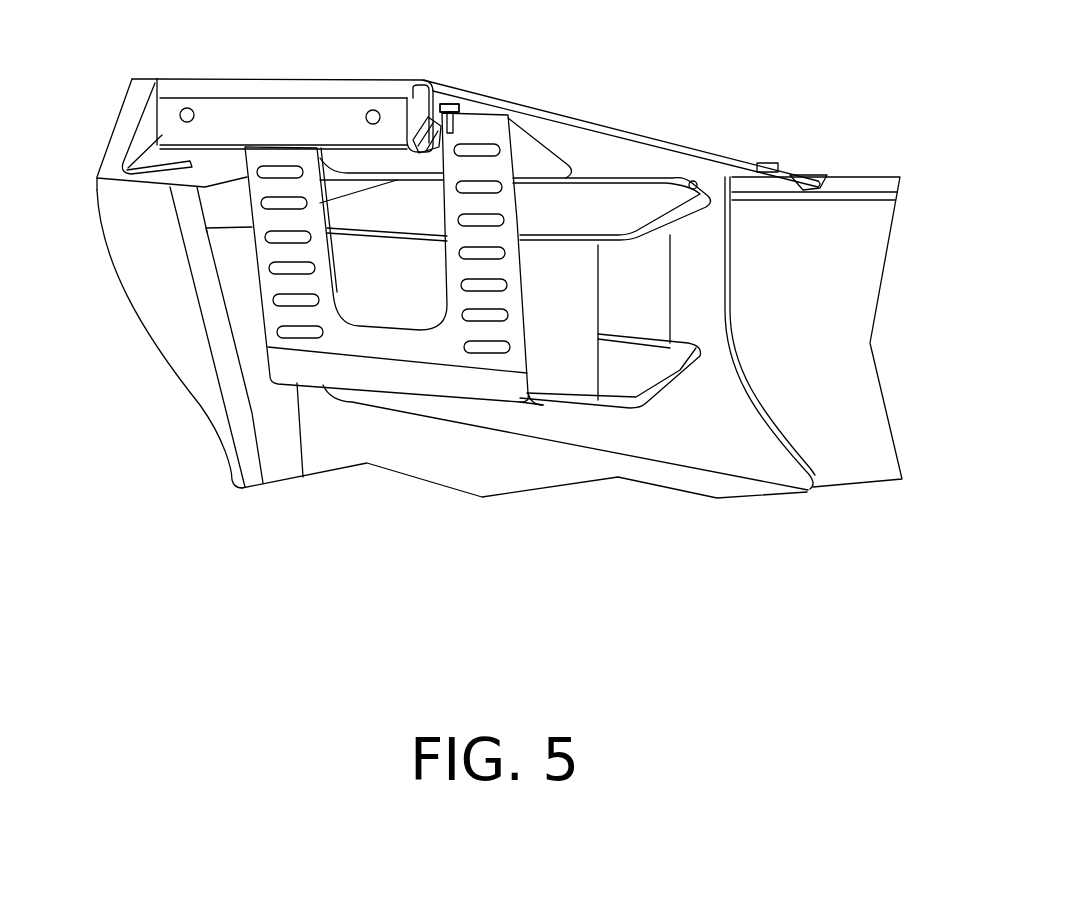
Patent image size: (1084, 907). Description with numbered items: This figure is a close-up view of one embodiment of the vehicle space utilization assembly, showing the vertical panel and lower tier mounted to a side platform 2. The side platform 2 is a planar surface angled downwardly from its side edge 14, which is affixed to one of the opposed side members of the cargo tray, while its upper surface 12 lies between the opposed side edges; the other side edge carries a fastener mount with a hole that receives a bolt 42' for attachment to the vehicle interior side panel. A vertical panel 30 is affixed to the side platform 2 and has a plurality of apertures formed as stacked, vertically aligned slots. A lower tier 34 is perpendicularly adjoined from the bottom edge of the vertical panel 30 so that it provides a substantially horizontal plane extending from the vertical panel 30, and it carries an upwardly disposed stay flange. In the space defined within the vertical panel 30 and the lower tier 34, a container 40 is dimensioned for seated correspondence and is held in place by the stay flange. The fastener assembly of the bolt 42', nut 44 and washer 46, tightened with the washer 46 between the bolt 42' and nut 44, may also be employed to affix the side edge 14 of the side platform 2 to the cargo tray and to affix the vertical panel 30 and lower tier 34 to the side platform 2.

The side platform 2 is at (647, 139).
The upper surface 12 is at (800, 176).
The side edge 14 is at (253, 83).
The vertical panel 30 is at (267, 283).
The lower tier 34 is at (550, 403).
The container 40 is at (655, 303).
The bolt 42' is at (745, 139).
The nut 44 is at (442, 103).
The washer 46 is at (436, 128).